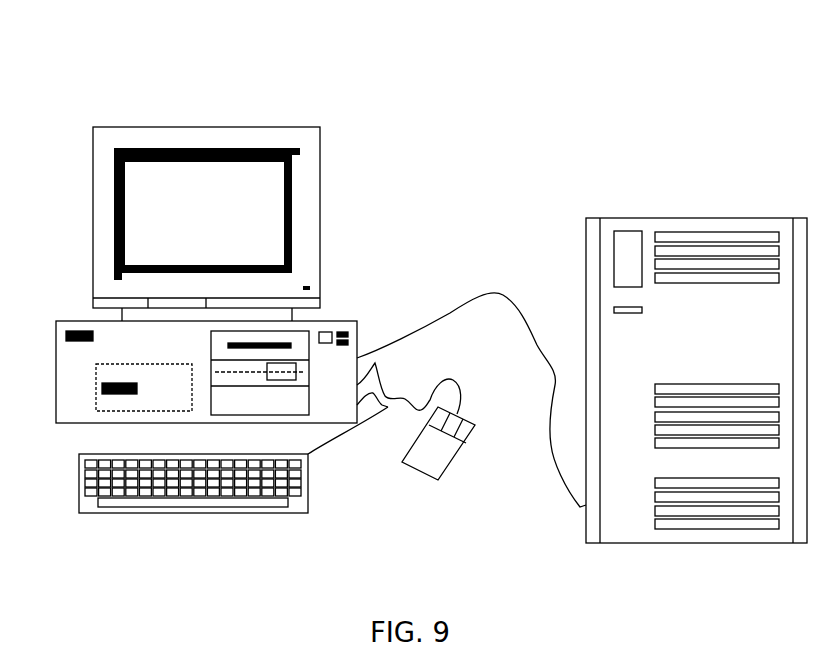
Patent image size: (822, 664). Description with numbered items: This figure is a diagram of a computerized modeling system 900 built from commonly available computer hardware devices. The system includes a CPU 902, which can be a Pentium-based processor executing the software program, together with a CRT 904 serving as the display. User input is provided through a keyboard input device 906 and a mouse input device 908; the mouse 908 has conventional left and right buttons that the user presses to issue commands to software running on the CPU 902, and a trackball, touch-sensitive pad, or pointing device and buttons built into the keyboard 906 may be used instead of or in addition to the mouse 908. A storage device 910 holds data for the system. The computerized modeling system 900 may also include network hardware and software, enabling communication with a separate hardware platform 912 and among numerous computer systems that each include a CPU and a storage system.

The computerized modeling system 900 is at (313, 95).
The CPU 902 is at (201, 359).
The CRT 904 is at (277, 209).
The keyboard input device 906 is at (78, 495).
The mouse input device 908 is at (431, 457).
The storage device 910 is at (289, 400).
The hardware platform 912 is at (640, 217).